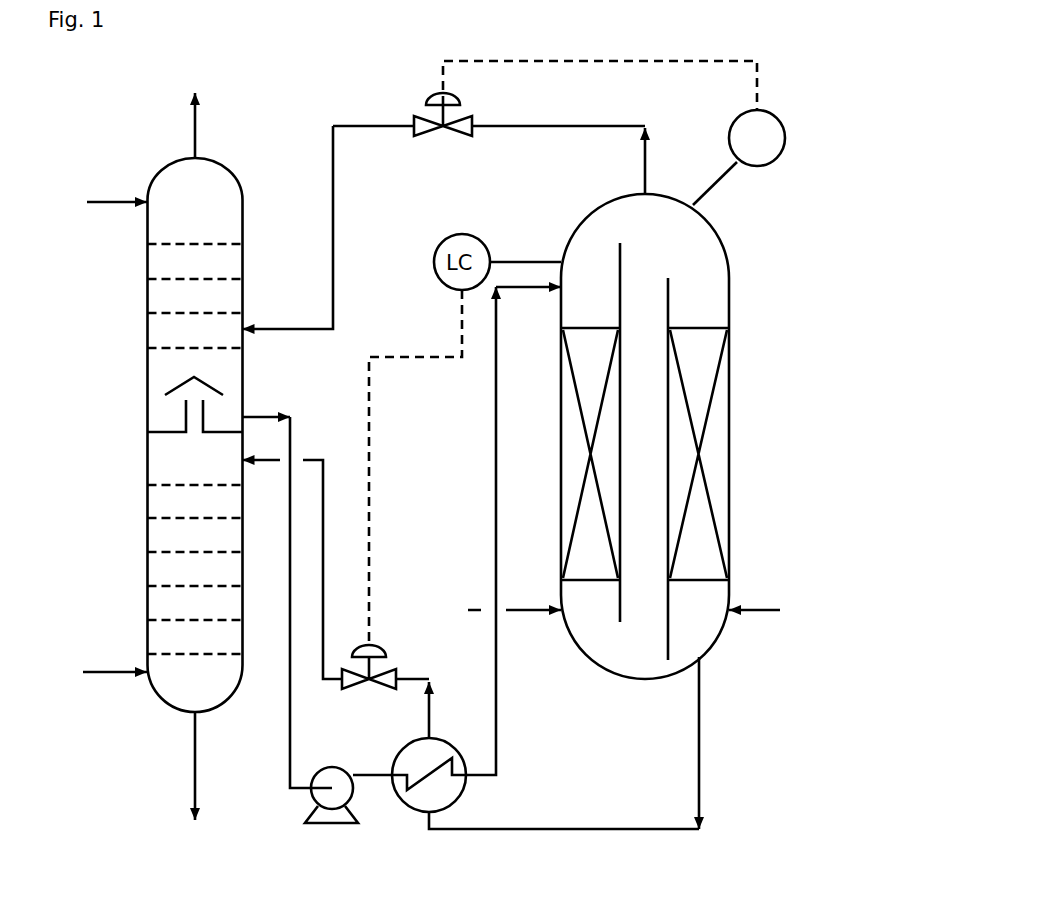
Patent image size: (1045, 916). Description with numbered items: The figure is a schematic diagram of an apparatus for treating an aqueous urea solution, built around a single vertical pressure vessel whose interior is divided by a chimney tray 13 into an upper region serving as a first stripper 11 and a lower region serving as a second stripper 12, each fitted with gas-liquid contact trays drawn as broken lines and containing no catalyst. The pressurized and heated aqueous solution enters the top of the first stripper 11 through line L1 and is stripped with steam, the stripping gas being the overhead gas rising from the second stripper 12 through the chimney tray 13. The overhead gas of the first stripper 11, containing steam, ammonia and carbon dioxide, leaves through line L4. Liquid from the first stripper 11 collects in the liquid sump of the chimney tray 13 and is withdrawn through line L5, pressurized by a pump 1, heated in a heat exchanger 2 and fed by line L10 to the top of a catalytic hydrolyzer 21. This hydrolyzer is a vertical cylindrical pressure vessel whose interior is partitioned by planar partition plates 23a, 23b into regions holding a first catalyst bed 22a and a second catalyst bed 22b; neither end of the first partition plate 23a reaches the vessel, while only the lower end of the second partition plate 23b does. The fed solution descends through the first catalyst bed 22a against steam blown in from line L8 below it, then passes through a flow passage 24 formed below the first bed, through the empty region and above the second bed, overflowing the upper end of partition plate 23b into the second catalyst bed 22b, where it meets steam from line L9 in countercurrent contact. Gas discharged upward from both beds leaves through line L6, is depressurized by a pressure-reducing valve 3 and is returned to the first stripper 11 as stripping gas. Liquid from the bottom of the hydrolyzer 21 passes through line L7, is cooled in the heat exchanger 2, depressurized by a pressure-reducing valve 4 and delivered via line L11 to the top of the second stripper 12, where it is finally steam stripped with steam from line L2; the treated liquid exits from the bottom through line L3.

The pump 1 is at (317, 827).
The heat exchanger 2 is at (400, 805).
The pressure-reducing valve 3 is at (448, 137).
The pressure-reducing valve 4 is at (376, 689).
The first stripper 11 is at (140, 315).
The second stripper 12 is at (140, 539).
The chimney tray 13 is at (187, 412).
The catalytic hydrolyzer 21 is at (727, 238).
The first catalyst bed 22a is at (577, 447).
The second catalyst bed 22b is at (720, 447).
The first partition plate 23a is at (615, 622).
The second partition plate 23b is at (660, 660).
The flow passage 24 is at (642, 302).
The line L1 is at (105, 192).
The line L2 is at (100, 685).
The line L3 is at (189, 770).
The line L4 is at (200, 128).
The line L5 is at (293, 420).
The line L6 is at (649, 156).
The line L7 is at (702, 718).
The line L8 is at (476, 601).
The line L9 is at (763, 601).
The line L10 is at (494, 420).
The line L11 is at (325, 520).